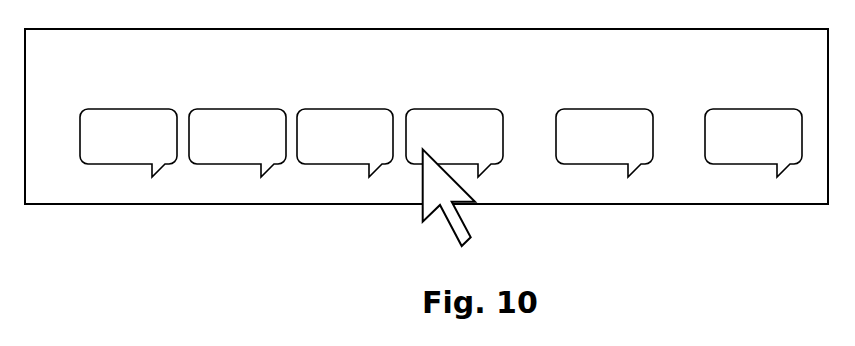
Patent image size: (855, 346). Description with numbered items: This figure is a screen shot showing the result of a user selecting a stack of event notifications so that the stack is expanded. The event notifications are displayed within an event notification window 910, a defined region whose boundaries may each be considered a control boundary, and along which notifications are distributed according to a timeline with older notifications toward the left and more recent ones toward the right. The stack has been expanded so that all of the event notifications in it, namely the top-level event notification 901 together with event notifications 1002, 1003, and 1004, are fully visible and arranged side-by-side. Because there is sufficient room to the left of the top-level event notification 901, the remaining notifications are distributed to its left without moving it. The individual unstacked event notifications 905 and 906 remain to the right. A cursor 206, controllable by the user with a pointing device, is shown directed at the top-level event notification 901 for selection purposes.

The event notification window 910 is at (253, 204).
The event notification 1004 is at (106, 153).
The event notification 1003 is at (215, 153).
The event notification 1002 is at (323, 153).
The top-level event notification 901 is at (438, 153).
The event notification 905 is at (587, 153).
The event notification 906 is at (736, 153).
The cursor 206 is at (470, 226).